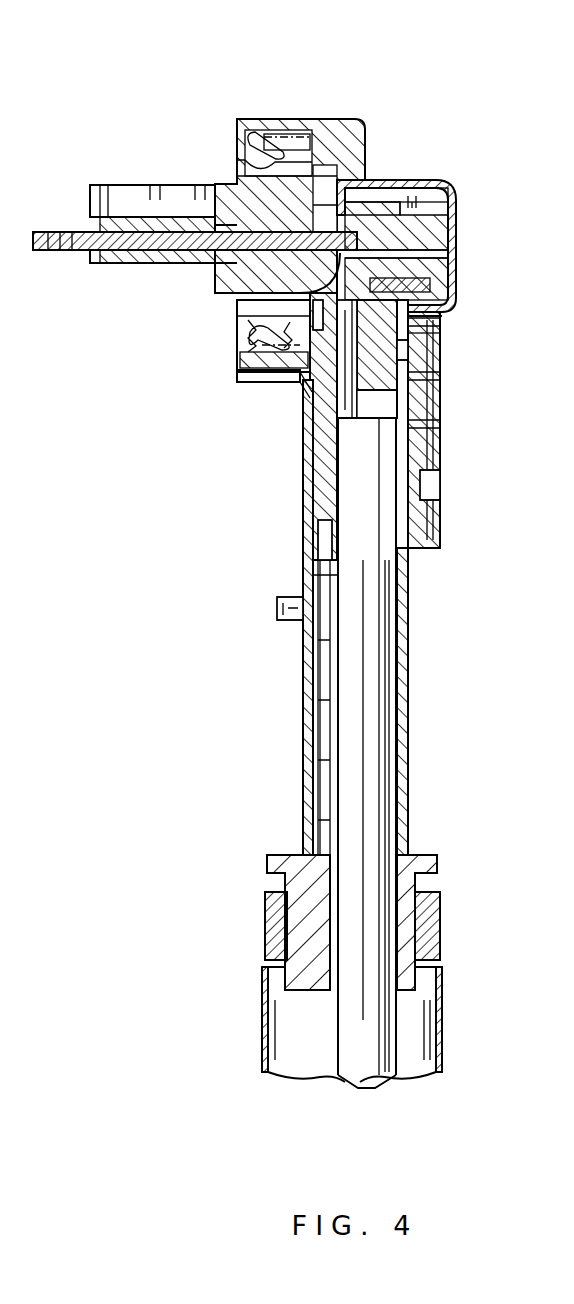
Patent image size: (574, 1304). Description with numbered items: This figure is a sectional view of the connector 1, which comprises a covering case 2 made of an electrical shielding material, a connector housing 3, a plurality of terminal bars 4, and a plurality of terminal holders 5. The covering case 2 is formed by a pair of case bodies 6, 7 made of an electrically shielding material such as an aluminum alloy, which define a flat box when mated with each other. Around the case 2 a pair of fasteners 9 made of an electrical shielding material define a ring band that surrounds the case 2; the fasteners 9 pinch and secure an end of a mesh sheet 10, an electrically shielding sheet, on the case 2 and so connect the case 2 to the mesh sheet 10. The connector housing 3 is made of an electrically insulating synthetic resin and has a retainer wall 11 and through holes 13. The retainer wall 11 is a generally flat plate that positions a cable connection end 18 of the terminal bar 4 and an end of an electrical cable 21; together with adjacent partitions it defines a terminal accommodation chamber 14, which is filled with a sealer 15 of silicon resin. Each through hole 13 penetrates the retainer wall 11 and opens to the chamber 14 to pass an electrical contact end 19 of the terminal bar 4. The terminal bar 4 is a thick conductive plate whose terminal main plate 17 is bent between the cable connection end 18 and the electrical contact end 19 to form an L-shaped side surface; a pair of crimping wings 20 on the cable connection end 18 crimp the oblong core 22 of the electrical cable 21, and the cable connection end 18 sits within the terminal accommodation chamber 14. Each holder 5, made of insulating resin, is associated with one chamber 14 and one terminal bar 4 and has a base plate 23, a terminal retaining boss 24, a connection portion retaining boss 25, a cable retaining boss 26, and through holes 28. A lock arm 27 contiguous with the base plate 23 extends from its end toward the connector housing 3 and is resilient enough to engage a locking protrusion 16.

The connector 1 is at (150, 170).
The covering case 2 is at (522, 675).
The connector housing 3 is at (228, 304).
The terminal bar 4 is at (237, 378).
The terminal holder 5 is at (457, 267).
The case body 6 is at (310, 770).
The case body 7 is at (413, 760).
The fastener 9 is at (268, 935).
The mesh sheet 10 is at (442, 1030).
The retainer wall 11 is at (300, 400).
The through hole 13 is at (220, 292).
The terminal accommodation chamber 14 is at (440, 319).
The sealer 15 is at (440, 333).
The locking protrusion 16 is at (375, 205).
The terminal main plate 17 is at (247, 318).
The cable connection end 18 is at (288, 382).
The electrical contact end 19 is at (148, 264).
The crimping wing 20 is at (440, 433).
The electrical cable 21 is at (358, 1088).
The core 22 is at (443, 538).
The base plate 23 is at (440, 387).
The terminal retaining boss 24 is at (458, 227).
The connection portion retaining boss 25 is at (440, 368).
The cable retaining boss 26 is at (440, 502).
The lock arm 27 is at (360, 182).
The through hole 28 is at (457, 250).